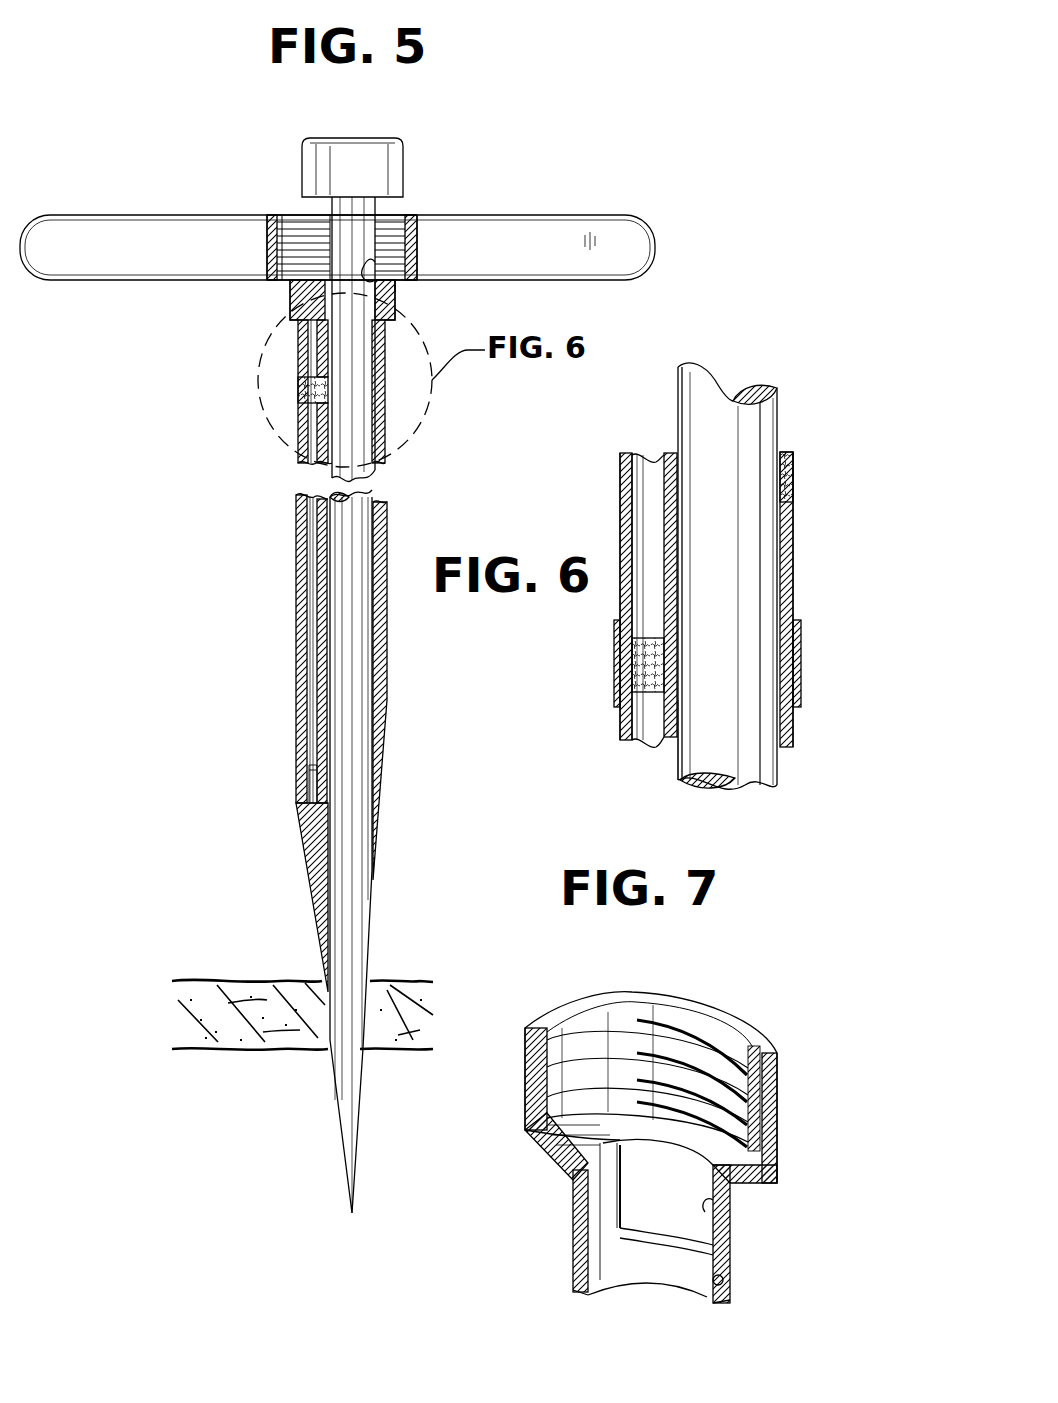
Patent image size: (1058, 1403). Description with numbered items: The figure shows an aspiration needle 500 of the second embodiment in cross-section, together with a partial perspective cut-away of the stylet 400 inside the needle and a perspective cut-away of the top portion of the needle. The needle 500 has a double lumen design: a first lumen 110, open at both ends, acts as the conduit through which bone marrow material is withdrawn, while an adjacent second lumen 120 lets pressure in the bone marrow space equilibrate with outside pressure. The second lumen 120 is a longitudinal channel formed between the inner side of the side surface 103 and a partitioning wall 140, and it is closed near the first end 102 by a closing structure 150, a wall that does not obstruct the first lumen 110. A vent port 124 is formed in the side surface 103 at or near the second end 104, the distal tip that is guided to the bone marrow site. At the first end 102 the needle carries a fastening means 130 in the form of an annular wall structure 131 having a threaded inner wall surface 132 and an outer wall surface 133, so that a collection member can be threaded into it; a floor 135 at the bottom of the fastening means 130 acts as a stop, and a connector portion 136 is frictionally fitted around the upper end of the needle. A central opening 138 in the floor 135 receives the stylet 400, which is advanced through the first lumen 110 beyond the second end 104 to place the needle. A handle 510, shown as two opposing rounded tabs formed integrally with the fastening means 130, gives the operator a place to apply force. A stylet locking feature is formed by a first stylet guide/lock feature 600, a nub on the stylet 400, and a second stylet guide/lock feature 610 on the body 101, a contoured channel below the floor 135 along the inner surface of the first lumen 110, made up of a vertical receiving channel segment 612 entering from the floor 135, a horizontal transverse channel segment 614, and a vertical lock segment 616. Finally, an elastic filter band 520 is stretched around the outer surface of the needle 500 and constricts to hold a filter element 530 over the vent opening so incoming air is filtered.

In FIG. 5, the handle 510 is at (85, 215).
In FIG. 5, the stylet 400 is at (388, 152).
In FIG. 6, the stylet 400 is at (778, 412).
In FIG. 5, the first end 102 is at (390, 228).
In FIG. 5, the fastening means 130 is at (268, 236).
In FIG. 7, the fastening means 130 is at (698, 1008).
In FIG. 5, the inner wall surface 132 is at (297, 228).
In FIG. 7, the inner wall surface 132 is at (560, 1038).
In FIG. 5, the outer wall surface 133 is at (268, 260).
In FIG. 7, the outer wall surface 133 is at (525, 1085).
In FIG. 5, the wall structure 131 is at (418, 262).
In FIG. 7, the wall structure 131 is at (777, 1100).
In FIG. 5, the central opening 138 is at (375, 262).
In FIG. 7, the central opening 138 is at (720, 1208).
In FIG. 5, the floor 135 is at (396, 282).
In FIG. 7, the floor 135 is at (575, 1135).
In FIG. 5, the closing structure 150 is at (292, 300).
In FIG. 5, the connector portion 136 is at (300, 316).
In FIG. 7, the connector portion 136 is at (575, 1253).
In FIG. 5, the second lumen 120 is at (318, 694).
In FIG. 6, the second lumen 120 is at (636, 505).
In FIG. 5, the filter element 530 is at (313, 390).
In FIG. 6, the filter element 530 is at (632, 660).
In FIG. 5, the side surface 103 is at (297, 540).
In FIG. 6, the side surface 103 is at (622, 714).
In FIG. 5, the first lumen 110 is at (362, 700).
In FIG. 6, the first lumen 110 is at (692, 745).
In FIG. 5, the vent port 124 is at (309, 762).
In FIG. 5, the aspiration needle 500 is at (270, 582).
In FIG. 5, the second end 104 is at (286, 990).
In FIG. 6, the first stylet guide/lock feature 600 is at (775, 482).
In FIG. 6, the partitioning wall 140 is at (650, 457).
In FIG. 6, the filter band 520 is at (800, 672).
In FIG. 6, the second stylet guide/lock feature 610 is at (796, 476).
In FIG. 7, the second stylet guide/lock feature 610 is at (658, 1238).
In FIG. 6, the body 101 is at (792, 735).
In FIG. 7, the receiving channel segment 612 is at (612, 1185).
In FIG. 7, the transverse channel segment 614 is at (712, 1242).
In FIG. 7, the lock segment 616 is at (722, 1283).